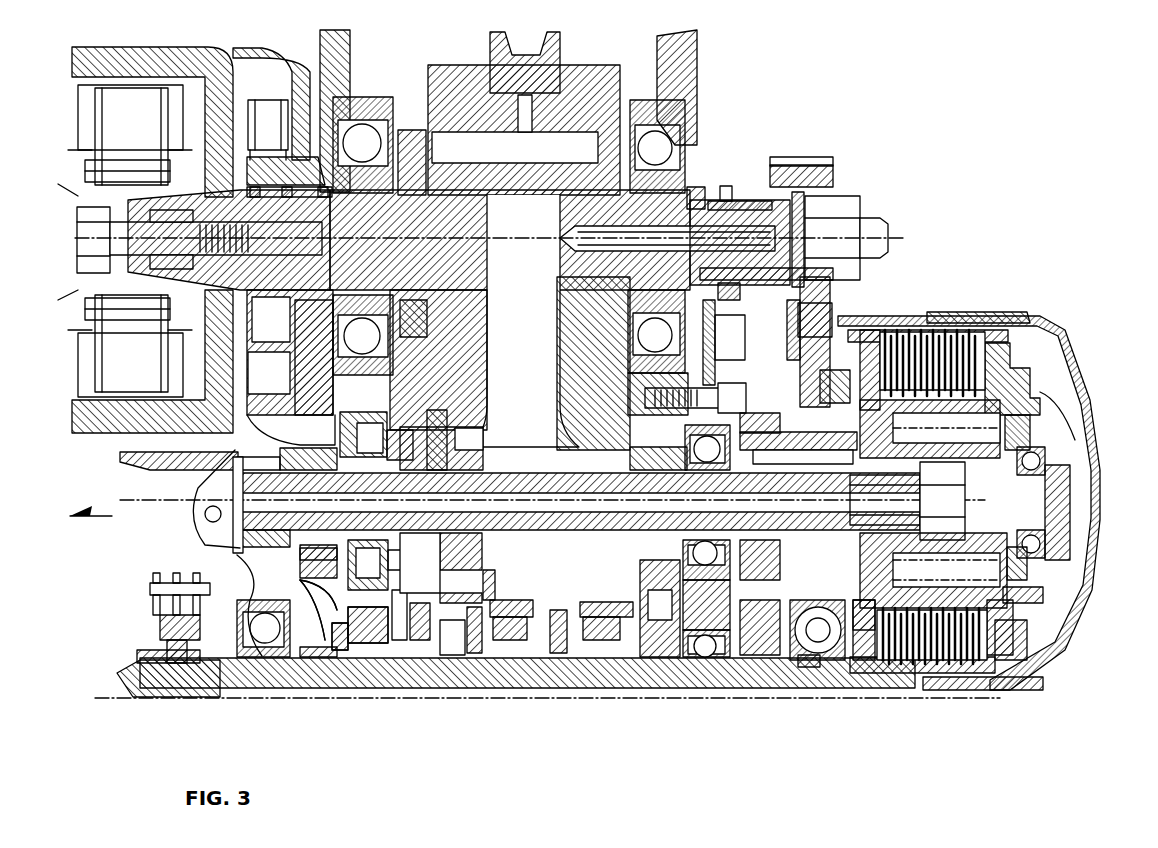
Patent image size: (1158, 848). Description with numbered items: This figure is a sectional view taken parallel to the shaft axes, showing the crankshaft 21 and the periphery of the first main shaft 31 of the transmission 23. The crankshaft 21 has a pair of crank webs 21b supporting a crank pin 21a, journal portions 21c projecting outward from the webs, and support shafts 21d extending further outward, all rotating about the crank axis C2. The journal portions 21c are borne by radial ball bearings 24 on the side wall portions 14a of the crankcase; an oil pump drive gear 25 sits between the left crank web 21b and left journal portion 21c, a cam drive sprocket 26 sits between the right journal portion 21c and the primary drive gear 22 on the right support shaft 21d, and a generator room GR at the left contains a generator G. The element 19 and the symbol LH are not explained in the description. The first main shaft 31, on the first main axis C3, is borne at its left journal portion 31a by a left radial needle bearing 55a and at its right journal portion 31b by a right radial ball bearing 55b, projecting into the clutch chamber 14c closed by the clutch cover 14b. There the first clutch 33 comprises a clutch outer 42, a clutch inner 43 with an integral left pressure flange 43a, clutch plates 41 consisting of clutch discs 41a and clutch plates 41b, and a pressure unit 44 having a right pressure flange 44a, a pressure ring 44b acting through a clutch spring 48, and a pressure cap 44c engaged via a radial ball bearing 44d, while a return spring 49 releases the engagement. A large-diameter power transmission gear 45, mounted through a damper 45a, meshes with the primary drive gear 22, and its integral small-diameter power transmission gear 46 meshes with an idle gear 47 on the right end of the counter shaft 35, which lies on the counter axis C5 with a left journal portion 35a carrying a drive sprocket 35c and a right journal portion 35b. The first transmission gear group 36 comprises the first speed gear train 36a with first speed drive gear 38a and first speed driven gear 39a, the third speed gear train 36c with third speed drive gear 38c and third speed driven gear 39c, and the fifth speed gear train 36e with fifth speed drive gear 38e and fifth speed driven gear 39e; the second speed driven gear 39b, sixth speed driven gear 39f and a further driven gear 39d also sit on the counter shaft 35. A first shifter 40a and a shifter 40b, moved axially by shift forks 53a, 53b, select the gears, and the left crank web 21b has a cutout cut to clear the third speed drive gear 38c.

The generator G is at (78, 102).
The generator room GR is at (320, 317).
The side wall portion 14a is at (325, 398).
The clutch cover 14b is at (1068, 348).
The clutch chamber 14c is at (1042, 392).
The primary drive gear 19 is at (498, 52).
The crankshaft 21 is at (574, 60).
The crank pin 21a is at (670, 108).
The crank web 21b is at (557, 326).
The journal portion 21c is at (345, 135).
The support shaft 21d is at (240, 200).
The primary drive gear 22 is at (830, 172).
The transmission 23 is at (885, 674).
The radial ball bearing 24 is at (366, 124).
The oil pump drive gear 25 is at (408, 130).
The cam drive sprocket 26 is at (727, 187).
The first main shaft 31 is at (298, 464).
The left journal portion 31a is at (238, 483).
The right journal portion 31b is at (717, 427).
The first clutch 33 is at (1018, 344).
The counter shaft 35 is at (147, 698).
The left journal portion 35a is at (122, 679).
The right journal portion 35b is at (706, 668).
The drive sprocket 35c is at (165, 641).
The first transmission gear group 36 is at (403, 442).
The first speed gear train 36a is at (160, 528).
The third speed gear train 36c is at (566, 545).
The fifth speed gear train 36e is at (250, 753).
The first speed drive gear 38a is at (250, 556).
The third speed drive gear 38c is at (472, 562).
The fifth speed drive gear 38e is at (330, 660).
The first speed driven gear 39a is at (262, 606).
The second speed driven gear 39b is at (652, 655).
The third speed driven gear 39c is at (495, 600).
The fourth driven gear 39d is at (548, 655).
The fifth speed driven gear 39e is at (342, 690).
The sixth speed driven gear 39f is at (612, 642).
The first shifter 40a is at (495, 575).
The shifter 40b is at (330, 592).
The clutch plates 41 is at (967, 254).
The clutch disc 41a is at (942, 340).
The clutch plate 41b is at (912, 334).
The clutch outer 42 is at (946, 690).
The clutch inner 43 is at (980, 660).
The left pressure flange 43a is at (866, 660).
The pressure unit 44 is at (1034, 628).
The right pressure flange 44a is at (1012, 657).
The pressure ring 44b is at (1032, 572).
The pressure cap 44c is at (1062, 537).
The radial ball bearing 44d is at (1050, 553).
The large-diameter power transmission gear 45 is at (824, 352).
The damper 45a is at (832, 660).
The small-diameter power transmission gear 46 is at (771, 418).
The idle gear 47 is at (798, 655).
The clutch spring 48 is at (972, 558).
The return spring 49 is at (955, 430).
The shift fork 53a is at (451, 650).
The shift fork 53b is at (424, 650).
The left radial needle bearing 55a is at (245, 470).
The right radial ball bearing 55b is at (690, 445).
The crank axis C2 is at (893, 238).
The first main axis C3 is at (175, 502).
The counter axis C5 is at (115, 702).
The left-hand direction LH is at (86, 501).
The cutout cut is at (484, 430).